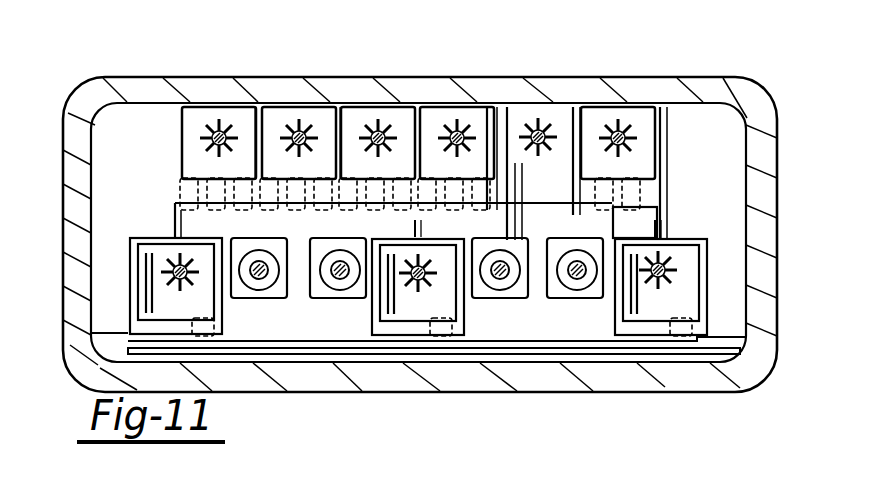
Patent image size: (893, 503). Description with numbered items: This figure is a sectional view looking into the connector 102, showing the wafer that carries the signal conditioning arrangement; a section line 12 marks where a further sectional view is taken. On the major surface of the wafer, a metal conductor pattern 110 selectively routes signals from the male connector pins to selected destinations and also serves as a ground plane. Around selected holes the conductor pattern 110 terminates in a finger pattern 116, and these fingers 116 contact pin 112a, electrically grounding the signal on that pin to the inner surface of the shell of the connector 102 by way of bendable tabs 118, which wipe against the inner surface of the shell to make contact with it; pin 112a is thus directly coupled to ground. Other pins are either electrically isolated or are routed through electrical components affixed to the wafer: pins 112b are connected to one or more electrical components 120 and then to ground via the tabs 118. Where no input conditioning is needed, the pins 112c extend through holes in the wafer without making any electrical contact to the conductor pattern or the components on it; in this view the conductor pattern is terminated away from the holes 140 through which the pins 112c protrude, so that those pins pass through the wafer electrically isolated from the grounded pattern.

The section line 12- 12 is at (650, 217).
The connector 102 is at (760, 153).
The metal conductor pattern 110 is at (547, 340).
The connector pin 112a is at (530, 122).
The connector pins 112b is at (380, 125).
The connector pins 112c is at (493, 284).
The finger pattern 116 is at (296, 124).
The bendable tabs 118 is at (723, 338).
The electrical components 120 is at (432, 186).
The holes 140 is at (342, 285).